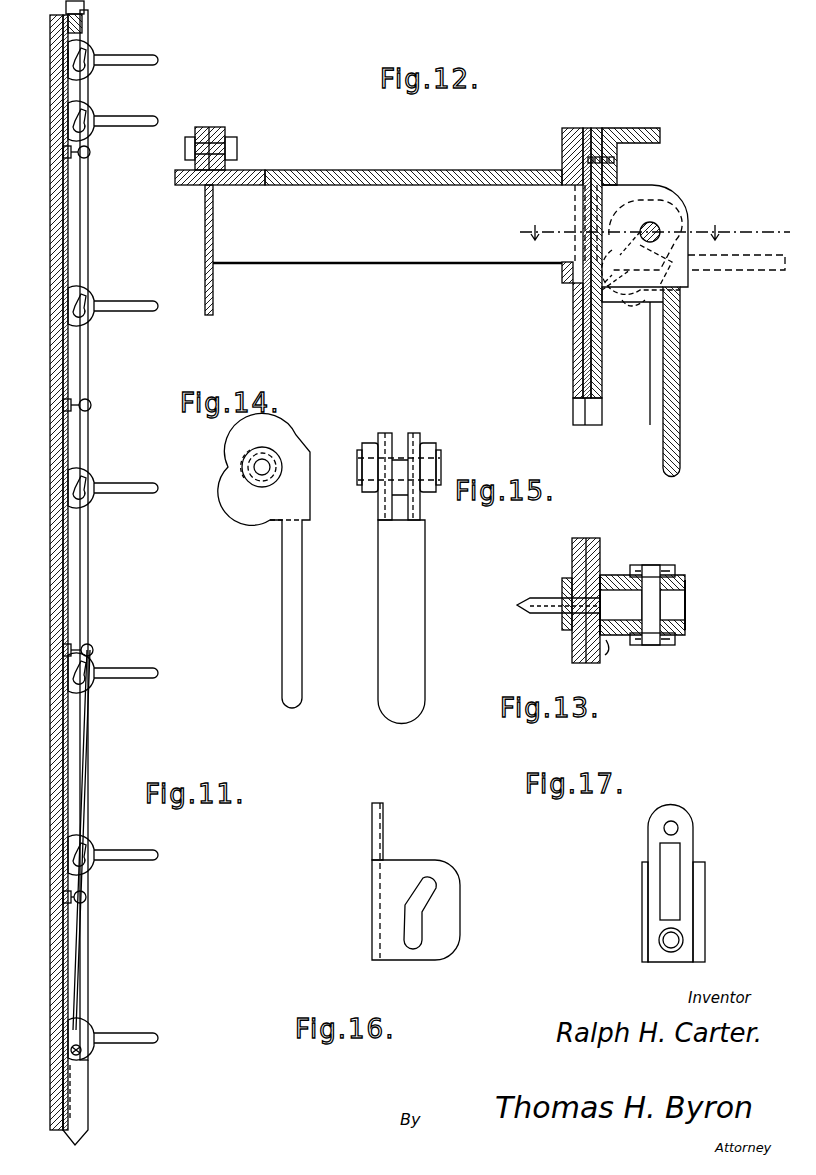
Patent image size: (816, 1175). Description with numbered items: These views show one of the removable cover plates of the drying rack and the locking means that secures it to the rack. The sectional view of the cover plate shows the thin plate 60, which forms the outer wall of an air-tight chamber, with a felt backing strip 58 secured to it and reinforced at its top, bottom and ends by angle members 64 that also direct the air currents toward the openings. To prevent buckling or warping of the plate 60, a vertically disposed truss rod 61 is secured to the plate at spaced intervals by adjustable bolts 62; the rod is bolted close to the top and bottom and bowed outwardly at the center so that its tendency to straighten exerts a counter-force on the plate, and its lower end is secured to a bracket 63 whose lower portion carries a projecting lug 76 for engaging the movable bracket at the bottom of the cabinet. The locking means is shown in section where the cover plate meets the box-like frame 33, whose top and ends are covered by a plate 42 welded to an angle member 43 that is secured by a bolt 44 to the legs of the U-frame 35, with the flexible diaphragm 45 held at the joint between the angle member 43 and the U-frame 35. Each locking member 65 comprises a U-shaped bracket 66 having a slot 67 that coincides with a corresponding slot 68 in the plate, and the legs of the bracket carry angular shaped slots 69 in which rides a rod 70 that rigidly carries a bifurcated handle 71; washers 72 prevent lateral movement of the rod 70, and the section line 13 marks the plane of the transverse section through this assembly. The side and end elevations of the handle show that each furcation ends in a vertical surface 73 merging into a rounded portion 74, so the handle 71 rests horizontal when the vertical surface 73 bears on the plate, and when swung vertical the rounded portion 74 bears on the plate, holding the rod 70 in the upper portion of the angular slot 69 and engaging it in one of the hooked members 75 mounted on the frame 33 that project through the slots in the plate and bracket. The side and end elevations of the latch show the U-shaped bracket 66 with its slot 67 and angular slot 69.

In FIG. 12, the section line 13— 13 is at (634, 233).
In FIG. 12, the box-like frame 33 is at (562, 140).
In FIG. 12, the U-frame 35 is at (202, 127).
In FIG. 12, the plate 42 is at (388, 163).
In FIG. 12, the angle member 43 is at (255, 170).
In FIG. 12, the bolt 44 is at (232, 140).
In FIG. 12, the flexible diaphragm 45 is at (213, 296).
In FIG. 11, the backing strip 58 is at (58, 280).
In FIG. 12, the backing strip 58 is at (573, 362).
In FIG. 13, the backing strip 58 is at (572, 640).
In FIG. 11, the plate 60 is at (66, 270).
In FIG. 11, the truss rod 61 is at (86, 225).
In FIG. 11, the adjustable bolt 62 is at (90, 152).
In FIG. 11, the bracket 63 is at (80, 1071).
In FIG. 11, the angle member 64 is at (84, 18).
In FIG. 12, the angle member 64 is at (640, 120).
In FIG. 11, the locking member 65 is at (99, 288).
In FIG. 12, the locking member 65 is at (709, 221).
In FIG. 11, the U-shaped bracket 66 is at (70, 117).
In FIG. 12, the U-shaped bracket 66 is at (668, 308).
In FIG. 13, the U-shaped bracket 66 is at (685, 582).
In FIG. 16, the U-shaped bracket 66 is at (380, 886).
In FIG. 17, the U-shaped bracket 66 is at (648, 890).
In FIG. 12, the slot 67 is at (583, 300).
In FIG. 13, the slot 67 is at (606, 648).
In FIG. 16, the slot 67 is at (376, 920).
In FIG. 17, the slot 67 is at (671, 910).
In FIG. 12, the slot 68 is at (570, 277).
In FIG. 13, the slot 68 is at (603, 575).
In FIG. 11, the angular shaped slot 69 is at (84, 482).
In FIG. 12, the angular shaped slot 69 is at (684, 282).
In FIG. 13, the angular shaped slot 69 is at (688, 632).
In FIG. 16, the angular shaped slot 69 is at (415, 913).
In FIG. 12, the rod 70 is at (657, 224).
In FIG. 14, the rod 70 is at (262, 467).
In FIG. 15, the rod 70 is at (405, 465).
In FIG. 13, the rod 70 is at (660, 606).
In FIG. 11, the bifurcated handle 71 is at (128, 68).
In FIG. 12, the bifurcated handle 71 is at (776, 270).
In FIG. 14, the bifurcated handle 71 is at (282, 633).
In FIG. 15, the bifurcated handle 71 is at (410, 622).
In FIG. 14, the washer 72 is at (272, 483).
In FIG. 15, the washer 72 is at (364, 450).
In FIG. 13, the washer 72 is at (668, 566).
In FIG. 12, the vertical surface 73 is at (655, 192).
In FIG. 14, the vertical surface 73 is at (252, 441).
In FIG. 15, the vertical surface 73 is at (388, 428).
In FIG. 12, the rounded portion 74 is at (632, 322).
In FIG. 14, the rounded portion 74 is at (229, 499).
In FIG. 15, the rounded portion 74 is at (410, 497).
In FIG. 12, the hooked member 75 is at (360, 262).
In FIG. 13, the hooked member 75 is at (540, 598).
In FIG. 11, the projecting lug 76 is at (78, 1111).